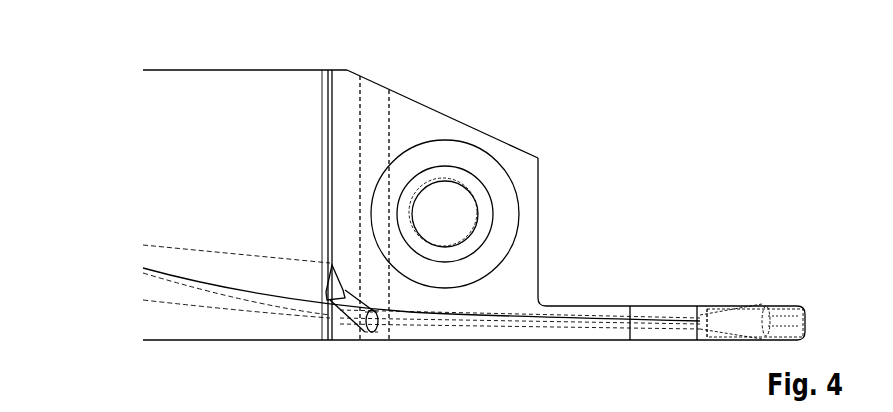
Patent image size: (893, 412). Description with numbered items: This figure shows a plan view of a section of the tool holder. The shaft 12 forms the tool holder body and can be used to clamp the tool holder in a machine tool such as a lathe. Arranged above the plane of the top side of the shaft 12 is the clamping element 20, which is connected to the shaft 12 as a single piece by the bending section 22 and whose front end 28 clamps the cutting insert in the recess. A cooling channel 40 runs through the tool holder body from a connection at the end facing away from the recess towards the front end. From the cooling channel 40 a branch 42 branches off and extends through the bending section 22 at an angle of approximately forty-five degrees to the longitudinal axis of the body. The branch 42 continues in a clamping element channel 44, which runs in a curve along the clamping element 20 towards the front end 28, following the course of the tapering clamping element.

The shaft 12 is at (223, 153).
The clamping element 20 is at (518, 160).
The bending section 22 is at (344, 83).
The front end 28 is at (653, 310).
The cooling channel 40 is at (220, 268).
The branch 42 is at (348, 318).
The clamping element channel 44 is at (552, 322).